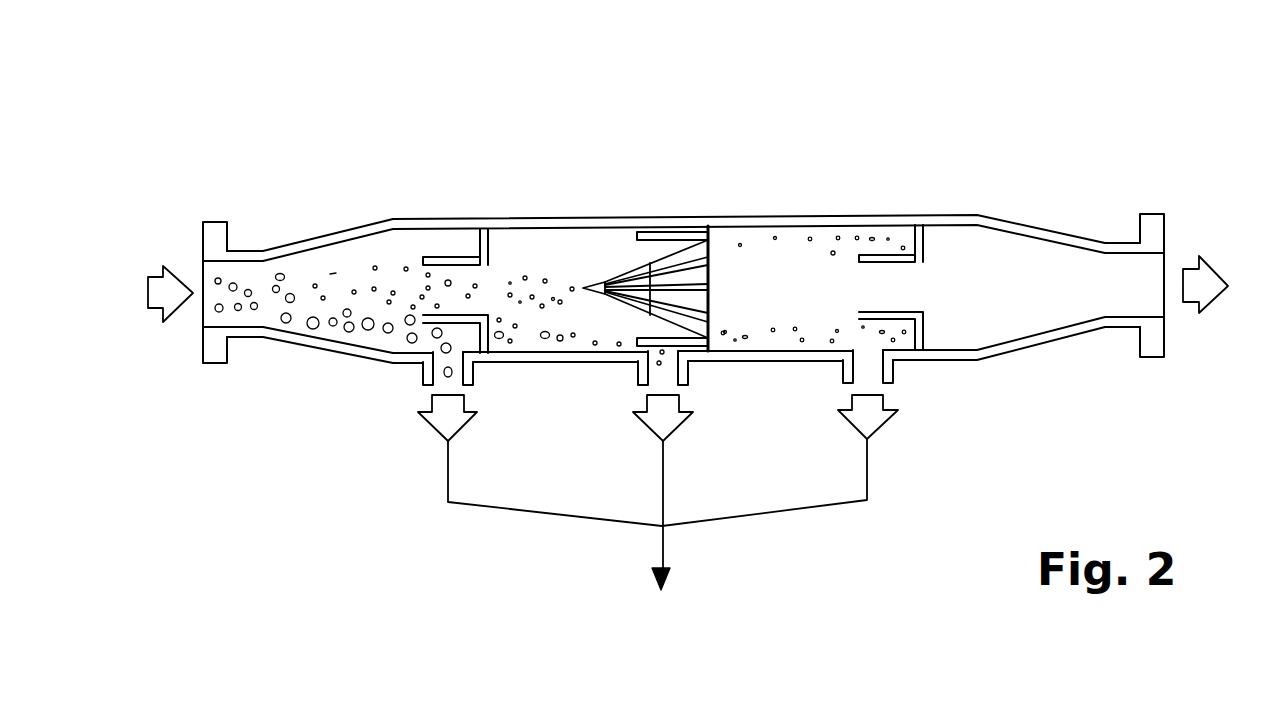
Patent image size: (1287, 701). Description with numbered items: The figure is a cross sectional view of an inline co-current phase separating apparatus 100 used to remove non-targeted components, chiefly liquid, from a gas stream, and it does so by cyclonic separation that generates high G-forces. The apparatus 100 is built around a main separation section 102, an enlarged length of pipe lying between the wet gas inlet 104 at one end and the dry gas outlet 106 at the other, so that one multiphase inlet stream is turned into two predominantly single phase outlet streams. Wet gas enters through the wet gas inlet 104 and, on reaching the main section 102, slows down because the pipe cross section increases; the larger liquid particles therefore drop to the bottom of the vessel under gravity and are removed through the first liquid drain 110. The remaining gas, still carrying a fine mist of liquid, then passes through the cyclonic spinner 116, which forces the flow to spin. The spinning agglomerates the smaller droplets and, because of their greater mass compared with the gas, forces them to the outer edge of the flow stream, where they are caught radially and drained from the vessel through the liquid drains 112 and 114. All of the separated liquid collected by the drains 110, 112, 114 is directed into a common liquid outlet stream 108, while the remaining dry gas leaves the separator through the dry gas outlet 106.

The inline phase separating apparatus 100 is at (960, 118).
The main separation section 102 is at (567, 263).
The wet gas inlet 104 is at (185, 245).
The dry gas outlet 106 is at (1183, 256).
The liquid outlet stream 108 is at (663, 543).
The liquid drain 110 is at (448, 475).
The liquid drain 112 is at (663, 483).
The liquid drain 114 is at (866, 480).
The cyclonic spinner 116 is at (695, 300).